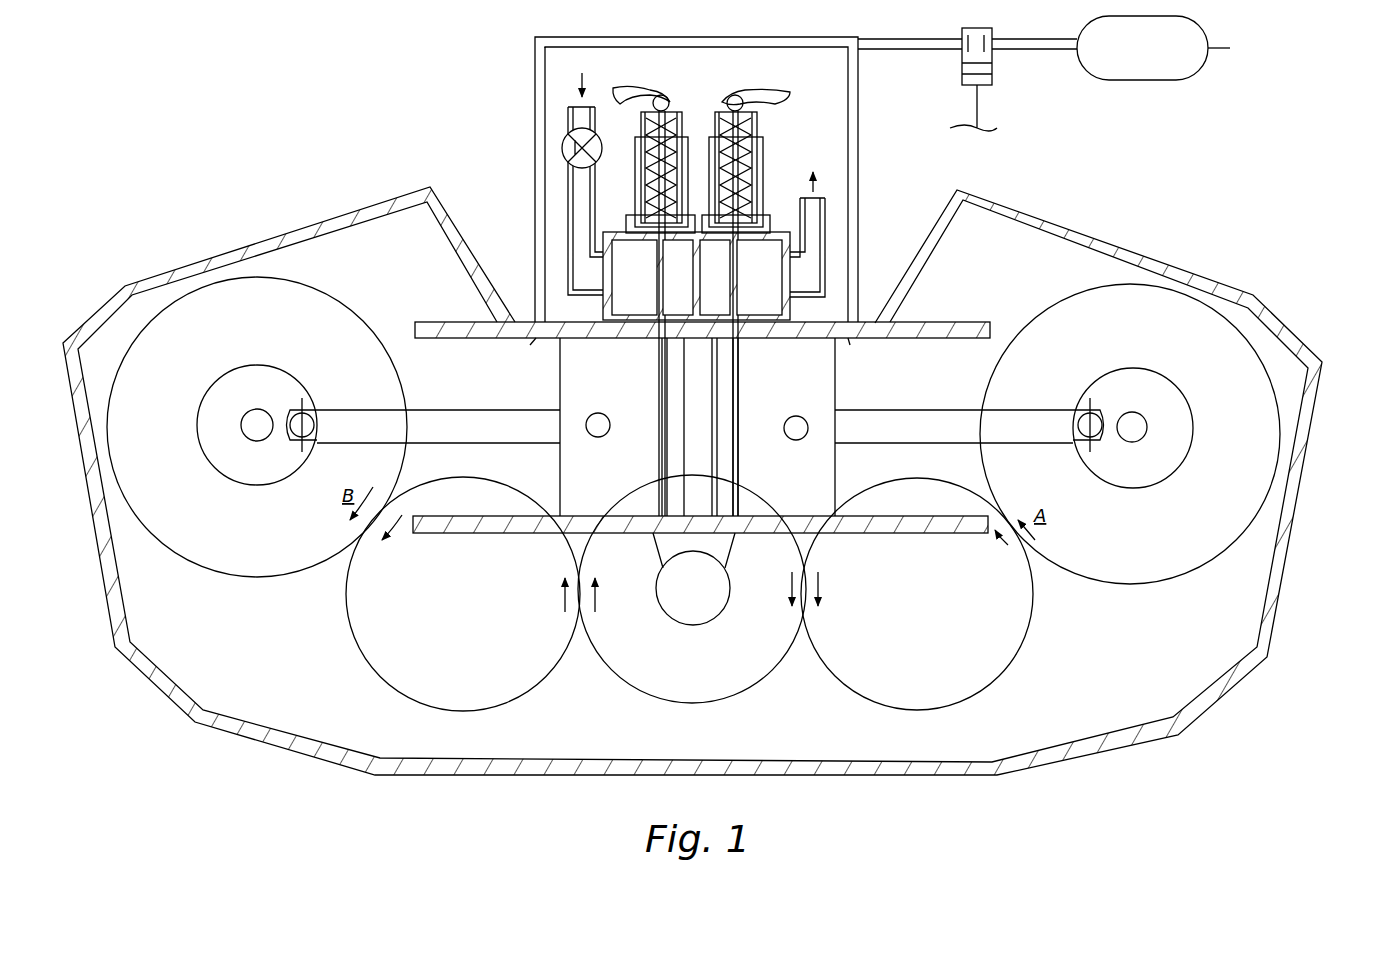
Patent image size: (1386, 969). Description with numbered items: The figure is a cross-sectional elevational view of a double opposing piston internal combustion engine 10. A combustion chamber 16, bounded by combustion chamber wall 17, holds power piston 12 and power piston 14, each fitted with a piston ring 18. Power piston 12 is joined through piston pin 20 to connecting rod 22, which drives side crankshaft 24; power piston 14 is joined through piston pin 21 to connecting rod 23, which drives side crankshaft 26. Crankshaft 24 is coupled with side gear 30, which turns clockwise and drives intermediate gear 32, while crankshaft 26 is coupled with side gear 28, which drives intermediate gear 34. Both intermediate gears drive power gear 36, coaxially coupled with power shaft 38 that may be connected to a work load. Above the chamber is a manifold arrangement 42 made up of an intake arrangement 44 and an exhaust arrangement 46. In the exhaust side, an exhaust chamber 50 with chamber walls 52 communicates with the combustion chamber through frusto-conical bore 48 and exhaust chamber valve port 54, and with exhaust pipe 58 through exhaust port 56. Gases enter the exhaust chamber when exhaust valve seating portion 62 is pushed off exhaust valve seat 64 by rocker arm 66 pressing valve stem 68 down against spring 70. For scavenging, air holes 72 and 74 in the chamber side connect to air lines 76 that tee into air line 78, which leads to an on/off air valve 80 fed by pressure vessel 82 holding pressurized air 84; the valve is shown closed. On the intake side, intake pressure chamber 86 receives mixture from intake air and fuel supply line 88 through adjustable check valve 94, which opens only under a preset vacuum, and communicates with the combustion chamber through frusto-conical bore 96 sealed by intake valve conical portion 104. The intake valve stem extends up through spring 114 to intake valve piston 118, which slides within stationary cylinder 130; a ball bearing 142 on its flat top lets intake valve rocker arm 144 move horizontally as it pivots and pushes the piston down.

The double opposing piston internal combustion engine 10 is at (232, 203).
The power piston 12 is at (584, 427).
The power piston 14 is at (805, 427).
The combustion chamber 16 is at (868, 515).
The combustion chamber wall 17 is at (904, 339).
The piston ring 18 is at (660, 452).
The piston pin 20 is at (600, 432).
The piston pin 21 is at (797, 436).
The connecting rod 22 is at (450, 410).
The connecting rod 23 is at (954, 418).
The side crankshaft 24 is at (278, 375).
The side crankshaft 26 is at (1113, 380).
The side gear 28 is at (1170, 583).
The side gear 30 is at (240, 578).
The intermediate gear 32 is at (362, 637).
The intermediate gear 34 is at (1030, 640).
The power gear 36 is at (712, 703).
The power shaft 38 is at (700, 625).
The manifold arrangement 42 is at (495, 100).
The intake arrangement 44 is at (620, 220).
The exhaust arrangement 46 is at (798, 224).
The frusto-conical bore 48 is at (745, 335).
The exhaust chamber 50 is at (696, 276).
The chamber walls 52 is at (784, 312).
The exhaust chamber valve port 54 is at (718, 318).
The exhaust port 56 is at (783, 272).
The exhaust pipe 58 is at (830, 205).
The exhaust valve seating portion 62 is at (740, 345).
The exhaust valve seat 64 is at (722, 345).
The rocker arm 66 is at (755, 95).
The valve stem 68 is at (745, 185).
The spring 70 is at (757, 128).
The air hole 72 is at (534, 348).
The air hole 74 is at (848, 340).
The air lines 76 is at (700, 36).
The air line 78 is at (903, 38).
The on/off air valve 80 is at (992, 67).
The pressure vessel 82 is at (1230, 48).
The pressurized air 84 is at (1142, 48).
The intake pressure chamber 86 is at (633, 288).
The intake air and fuel supply line 88 is at (595, 205).
The adjustable check valve 94 is at (562, 148).
The frusto-conical bore 96 is at (632, 340).
The intake valve conical portion 104 is at (652, 340).
The spring 114 is at (668, 130).
The intake valve piston 118 is at (677, 130).
The stationary cylinder 130 is at (640, 150).
The ball bearing 142 is at (661, 94).
The intake valve rocker arm 144 is at (628, 90).